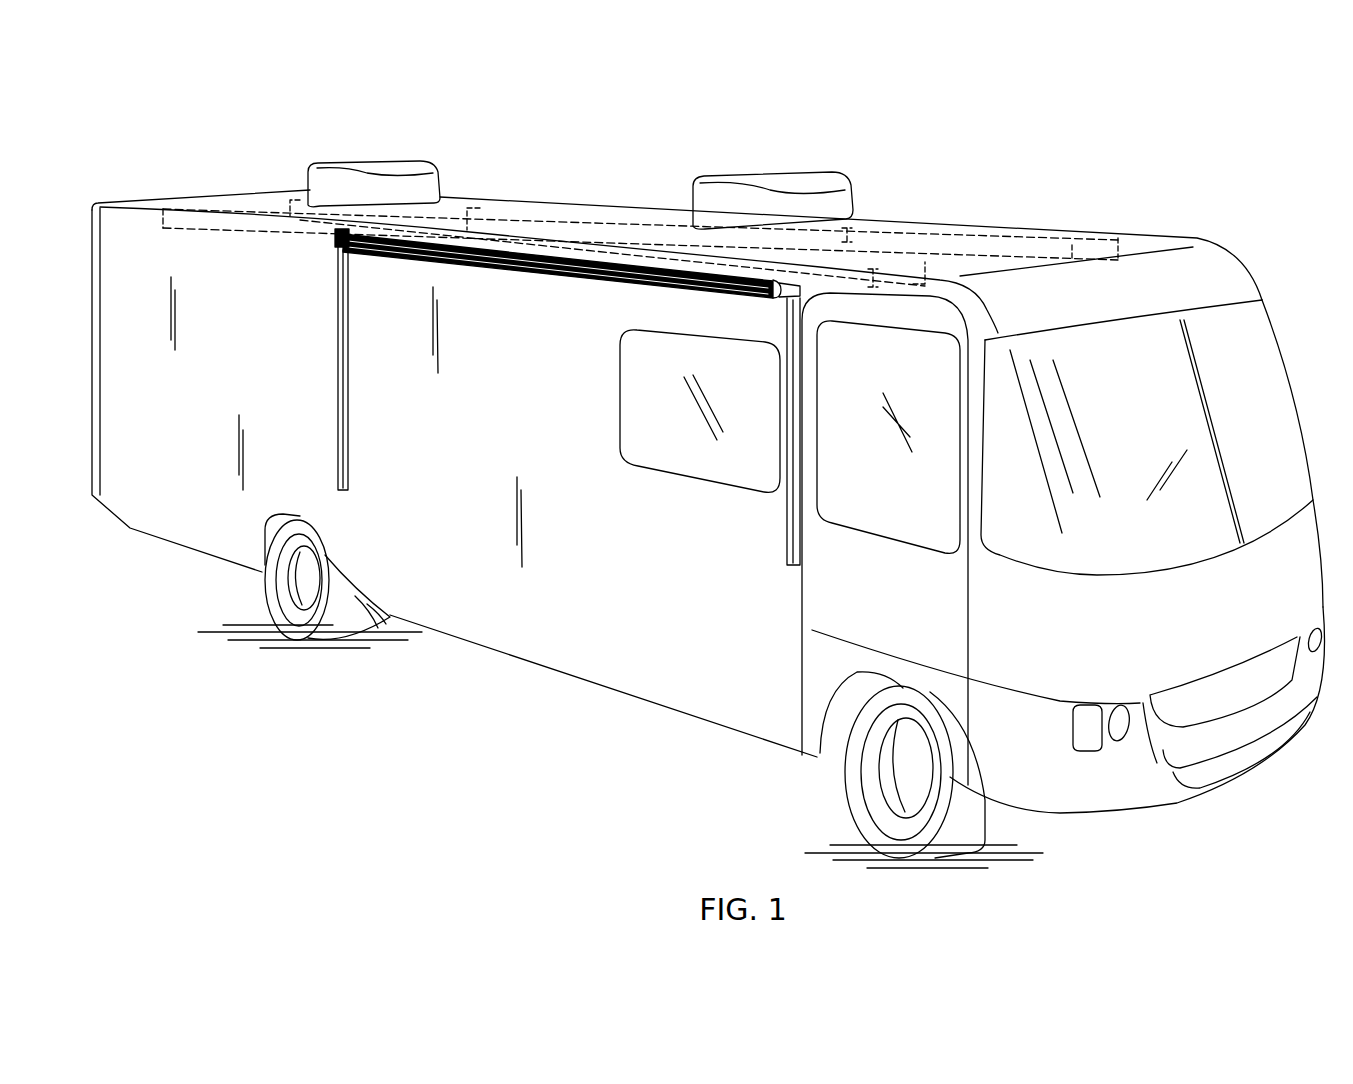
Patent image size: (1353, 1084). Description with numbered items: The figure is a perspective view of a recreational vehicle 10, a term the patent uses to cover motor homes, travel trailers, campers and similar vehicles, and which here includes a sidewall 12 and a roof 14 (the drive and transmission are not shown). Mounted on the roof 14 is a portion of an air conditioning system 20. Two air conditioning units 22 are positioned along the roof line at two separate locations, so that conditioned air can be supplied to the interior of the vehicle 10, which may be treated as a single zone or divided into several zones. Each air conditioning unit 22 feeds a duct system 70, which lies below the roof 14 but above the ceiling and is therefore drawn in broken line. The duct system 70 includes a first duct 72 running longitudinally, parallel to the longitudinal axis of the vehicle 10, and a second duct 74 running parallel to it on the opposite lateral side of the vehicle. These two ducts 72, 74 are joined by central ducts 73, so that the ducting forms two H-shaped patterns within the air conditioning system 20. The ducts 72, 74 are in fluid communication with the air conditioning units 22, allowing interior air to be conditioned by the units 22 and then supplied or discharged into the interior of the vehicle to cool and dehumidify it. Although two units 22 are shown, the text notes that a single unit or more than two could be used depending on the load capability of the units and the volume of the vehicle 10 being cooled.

The recreational vehicle 10 is at (1180, 162).
The sidewall 12 is at (173, 485).
The roof 14 is at (244, 200).
The air conditioning system 20 is at (858, 152).
The air conditioning unit 22 is at (398, 162).
The duct system 70 is at (667, 214).
The first duct 72 is at (285, 230).
The central duct 73 is at (467, 205).
The second duct 74 is at (1013, 240).